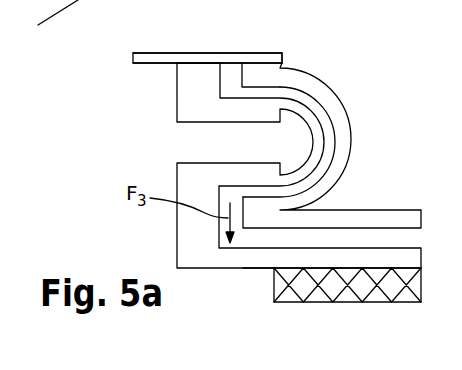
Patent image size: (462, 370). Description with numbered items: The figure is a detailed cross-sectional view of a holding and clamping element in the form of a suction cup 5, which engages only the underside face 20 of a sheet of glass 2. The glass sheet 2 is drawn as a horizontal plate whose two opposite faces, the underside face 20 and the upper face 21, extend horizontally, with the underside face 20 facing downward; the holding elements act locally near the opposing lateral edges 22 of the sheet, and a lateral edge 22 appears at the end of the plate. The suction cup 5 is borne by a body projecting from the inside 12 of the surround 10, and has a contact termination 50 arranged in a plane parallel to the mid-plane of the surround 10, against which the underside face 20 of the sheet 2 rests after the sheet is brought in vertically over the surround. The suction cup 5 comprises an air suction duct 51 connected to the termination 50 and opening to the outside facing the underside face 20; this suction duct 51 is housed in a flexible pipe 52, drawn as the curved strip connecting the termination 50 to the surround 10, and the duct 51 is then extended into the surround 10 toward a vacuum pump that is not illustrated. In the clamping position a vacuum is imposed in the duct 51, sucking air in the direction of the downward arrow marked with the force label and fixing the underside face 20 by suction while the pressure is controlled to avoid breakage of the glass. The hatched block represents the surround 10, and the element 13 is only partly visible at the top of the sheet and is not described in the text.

The sheet of glass 2 is at (133, 58).
The suction cup 5 is at (175, 147).
The surround 10 is at (421, 285).
The inside of the surround 12 is at (274, 272).
The upper element 13 is at (311, 5).
The underside face 20 is at (154, 65).
The upper face 21 is at (147, 52).
The lateral edge 22 is at (286, 59).
The contact termination 50 is at (272, 72).
The air suction duct 51 is at (309, 102).
The flexible pipe 52 is at (338, 155).